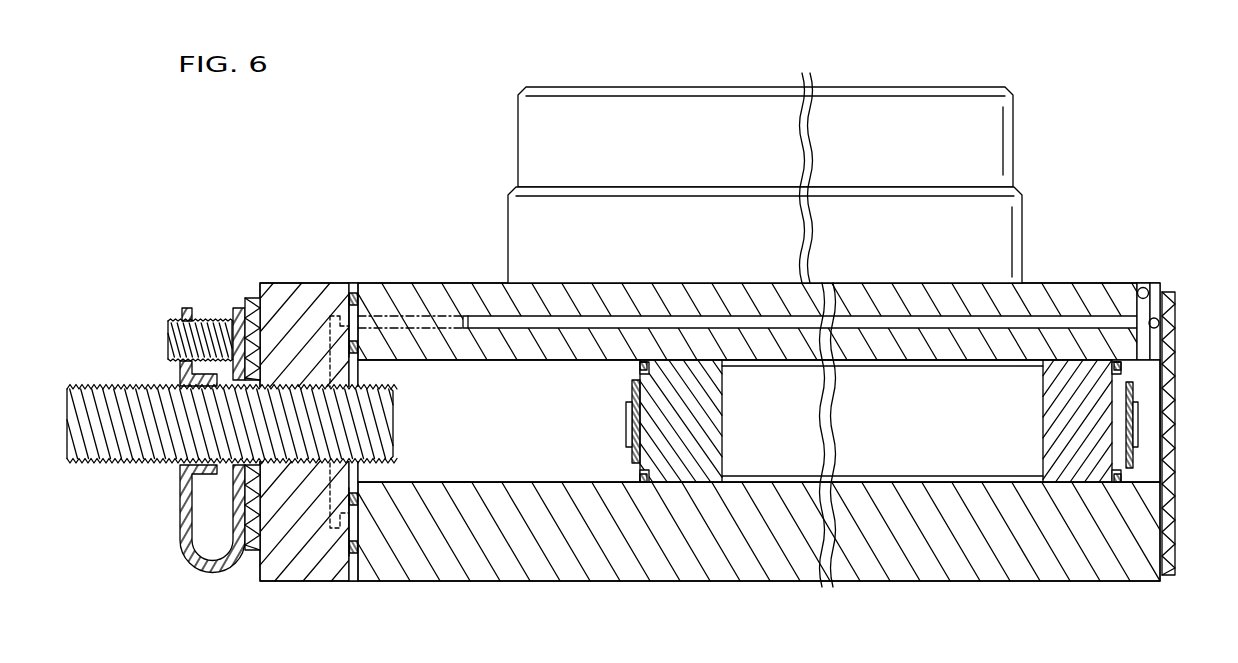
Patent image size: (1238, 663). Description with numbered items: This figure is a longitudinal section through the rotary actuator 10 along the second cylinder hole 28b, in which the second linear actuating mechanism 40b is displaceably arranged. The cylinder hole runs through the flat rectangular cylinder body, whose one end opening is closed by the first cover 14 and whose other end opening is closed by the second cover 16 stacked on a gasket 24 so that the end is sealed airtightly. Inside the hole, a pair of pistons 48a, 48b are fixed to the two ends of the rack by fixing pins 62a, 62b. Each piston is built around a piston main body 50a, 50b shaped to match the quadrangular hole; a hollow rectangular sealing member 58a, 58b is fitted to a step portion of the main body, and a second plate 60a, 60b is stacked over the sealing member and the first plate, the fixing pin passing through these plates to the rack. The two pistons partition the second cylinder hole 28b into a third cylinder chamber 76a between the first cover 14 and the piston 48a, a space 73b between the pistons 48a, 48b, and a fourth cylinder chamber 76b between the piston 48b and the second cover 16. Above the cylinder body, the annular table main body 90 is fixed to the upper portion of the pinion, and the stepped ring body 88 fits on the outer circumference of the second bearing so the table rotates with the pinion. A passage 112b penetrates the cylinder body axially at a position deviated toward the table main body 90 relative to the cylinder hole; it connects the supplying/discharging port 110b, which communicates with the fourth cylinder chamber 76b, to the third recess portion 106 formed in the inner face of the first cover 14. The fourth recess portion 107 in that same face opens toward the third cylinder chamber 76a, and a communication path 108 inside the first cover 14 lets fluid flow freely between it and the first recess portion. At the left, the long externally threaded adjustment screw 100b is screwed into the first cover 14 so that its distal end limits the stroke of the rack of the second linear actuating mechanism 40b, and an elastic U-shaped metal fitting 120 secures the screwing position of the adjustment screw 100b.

The rotary actuator 10 is at (275, 136).
The first cover 14 is at (287, 573).
The second cover 16 is at (1176, 312).
The gasket 24 is at (1152, 412).
The second cylinder hole 28b is at (499, 421).
The second linear actuating mechanism 40b is at (929, 481).
The piston 48a is at (620, 495).
The piston 48b is at (1132, 509).
The piston main body 50a is at (685, 483).
The piston main body 50b is at (1078, 483).
The sealing member 58a is at (640, 368).
The sealing member 58b is at (1124, 370).
The second plate 60a is at (638, 451).
The second plate 60b is at (1122, 485).
The fixing pin 62a is at (628, 420).
The fixing pin 62b is at (1138, 428).
The space 73b is at (882, 421).
The third cylinder chamber 76a is at (450, 463).
The fourth cylinder chamber 76b is at (1140, 478).
The ring body 88 is at (1022, 215).
The table main body 90 is at (893, 85).
The adjustment screw 100b is at (118, 468).
The third recess portion 106 is at (355, 292).
The fourth recess portion 107 is at (352, 470).
The communication path 108 is at (332, 478).
The supplying/discharging port 110b is at (1143, 348).
The passage 112b is at (1077, 323).
The metal fitting 120 is at (212, 573).